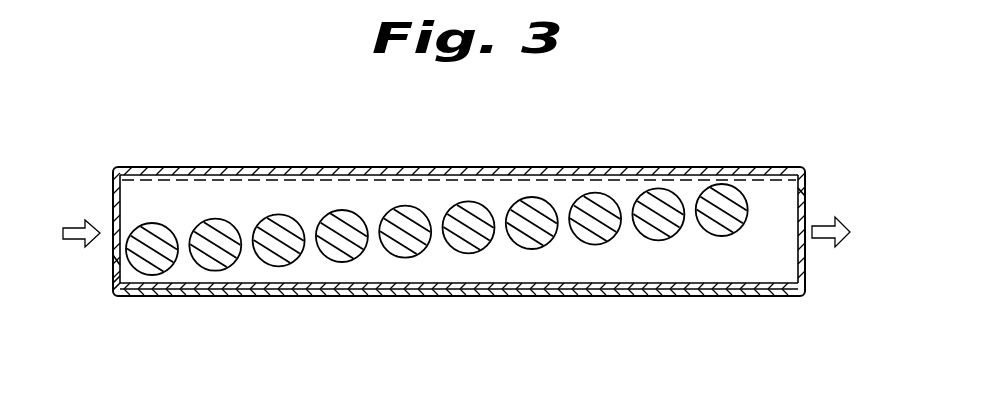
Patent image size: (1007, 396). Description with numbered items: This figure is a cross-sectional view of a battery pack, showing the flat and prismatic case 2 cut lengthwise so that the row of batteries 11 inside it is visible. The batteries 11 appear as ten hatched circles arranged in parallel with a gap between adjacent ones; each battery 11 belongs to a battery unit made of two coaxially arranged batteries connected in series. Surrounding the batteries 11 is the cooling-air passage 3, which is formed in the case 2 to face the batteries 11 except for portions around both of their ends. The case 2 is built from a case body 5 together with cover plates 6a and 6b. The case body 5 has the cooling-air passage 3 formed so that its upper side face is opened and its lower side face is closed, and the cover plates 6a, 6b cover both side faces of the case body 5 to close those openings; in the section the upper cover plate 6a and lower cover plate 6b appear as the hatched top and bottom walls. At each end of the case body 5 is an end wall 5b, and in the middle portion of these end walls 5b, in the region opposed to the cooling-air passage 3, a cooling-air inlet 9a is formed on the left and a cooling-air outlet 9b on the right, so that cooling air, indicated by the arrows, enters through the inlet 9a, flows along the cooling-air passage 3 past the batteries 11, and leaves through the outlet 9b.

The case 2 is at (317, 164).
The cooling-air passage 3 is at (191, 221).
The case body 5 is at (110, 275).
The end wall 5b is at (112, 260).
The cover plate 6a is at (410, 167).
The cover plate 6b is at (425, 296).
The cooling-air inlet 9a is at (112, 222).
The cooling-air outlet 9b is at (803, 245).
The battery 11 is at (215, 255).